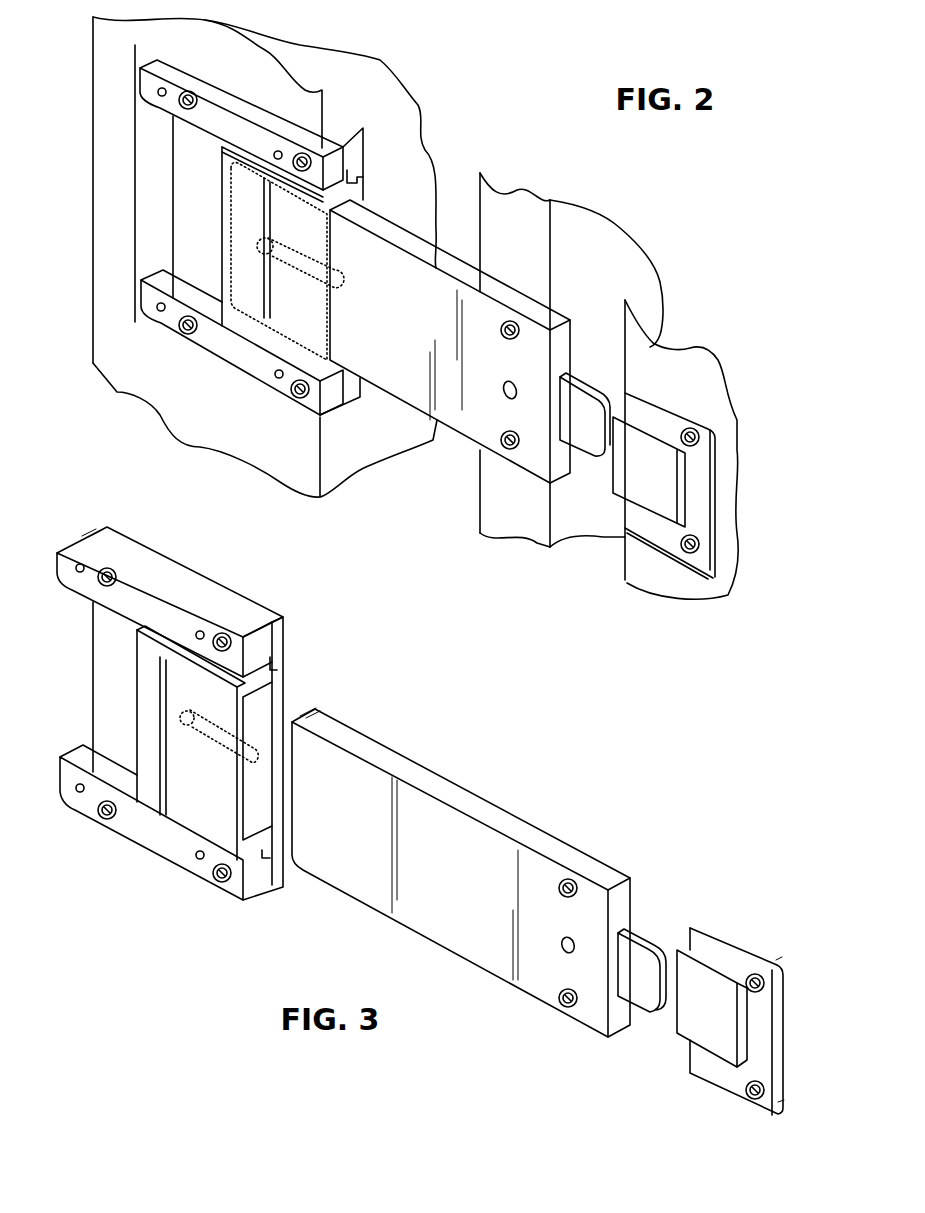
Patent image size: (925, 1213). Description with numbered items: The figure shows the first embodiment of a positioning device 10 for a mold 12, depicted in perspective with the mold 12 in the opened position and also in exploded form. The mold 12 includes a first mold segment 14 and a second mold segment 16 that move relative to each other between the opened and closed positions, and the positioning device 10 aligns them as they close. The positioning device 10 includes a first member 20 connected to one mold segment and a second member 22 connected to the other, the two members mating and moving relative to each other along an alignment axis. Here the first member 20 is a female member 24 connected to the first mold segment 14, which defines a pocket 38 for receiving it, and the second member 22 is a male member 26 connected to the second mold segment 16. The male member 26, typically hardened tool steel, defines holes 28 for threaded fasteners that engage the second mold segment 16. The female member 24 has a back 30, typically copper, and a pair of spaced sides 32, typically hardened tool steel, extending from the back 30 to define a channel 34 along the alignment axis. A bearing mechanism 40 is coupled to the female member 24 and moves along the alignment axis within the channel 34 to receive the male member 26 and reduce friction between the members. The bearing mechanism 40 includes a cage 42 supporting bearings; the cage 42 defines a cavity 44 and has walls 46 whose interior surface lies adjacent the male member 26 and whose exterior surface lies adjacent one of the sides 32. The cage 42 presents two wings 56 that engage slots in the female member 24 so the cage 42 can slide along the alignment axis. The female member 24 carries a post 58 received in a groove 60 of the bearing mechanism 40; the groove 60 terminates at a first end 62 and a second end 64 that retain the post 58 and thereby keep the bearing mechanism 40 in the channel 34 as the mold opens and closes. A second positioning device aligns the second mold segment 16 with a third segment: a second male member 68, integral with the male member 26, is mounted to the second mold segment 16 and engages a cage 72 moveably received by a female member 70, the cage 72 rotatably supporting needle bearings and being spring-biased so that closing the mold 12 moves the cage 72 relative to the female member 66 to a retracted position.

In FIG. 2, the positioning device 10 is at (453, 214).
In FIG. 3, the positioning device 10 is at (606, 800).
In FIG. 2, the mold 12 is at (383, 107).
In FIG. 2, the first mold segment 14 is at (178, 47).
In FIG. 2, the second mold segment 16 is at (510, 520).
In FIG. 2, the first member 20 is at (258, 209).
In FIG. 3, the first member 20 is at (195, 711).
In FIG. 2, the second member 22 is at (450, 345).
In FIG. 3, the second member 22 is at (461, 872).
In FIG. 2, the female member 24 is at (241, 209).
In FIG. 3, the female member 24 is at (170, 711).
In FIG. 2, the male member 26 is at (385, 334).
In FIG. 3, the male member 26 is at (442, 882).
In FIG. 2, the holes 28 is at (511, 320).
In FIG. 2, the back 30 is at (188, 174).
In FIG. 3, the back 30 is at (103, 707).
In FIG. 2, the sides 32 is at (221, 139).
In FIG. 3, the sides 32 is at (139, 619).
In FIG. 2, the channel 34 is at (129, 207).
In FIG. 3, the channel 34 is at (81, 687).
In FIG. 2, the pocket 38 is at (147, 317).
In FIG. 2, the bearing mechanism 40 is at (272, 298).
In FIG. 3, the bearing mechanism 40 is at (169, 760).
In FIG. 2, the cage 42 is at (272, 236).
In FIG. 3, the cage 42 is at (191, 743).
In FIG. 3, the cavity 44 is at (255, 819).
In FIG. 2, the walls 46 is at (343, 197).
In FIG. 3, the walls 46 is at (270, 685).
In FIG. 2, the wing 56 is at (353, 187).
In FIG. 3, the wing 56 is at (273, 667).
In FIG. 2, the post 58 is at (264, 240).
In FIG. 3, the post 58 is at (192, 715).
In FIG. 2, the groove 60 is at (264, 284).
In FIG. 3, the groove 60 is at (224, 748).
In FIG. 2, the first end 62 is at (260, 243).
In FIG. 3, the first end 62 is at (188, 720).
In FIG. 2, the second end 64 is at (337, 278).
In FIG. 3, the second end 64 is at (260, 760).
In FIG. 2, the female member 66 is at (700, 504).
In FIG. 3, the female member 66 is at (740, 1009).
In FIG. 2, the second male member 68 is at (593, 376).
In FIG. 3, the second male member 68 is at (644, 929).
In FIG. 2, the female member 70 is at (700, 513).
In FIG. 3, the female member 70 is at (763, 1013).
In FIG. 2, the cage 72 is at (657, 494).
In FIG. 3, the cage 72 is at (717, 1043).